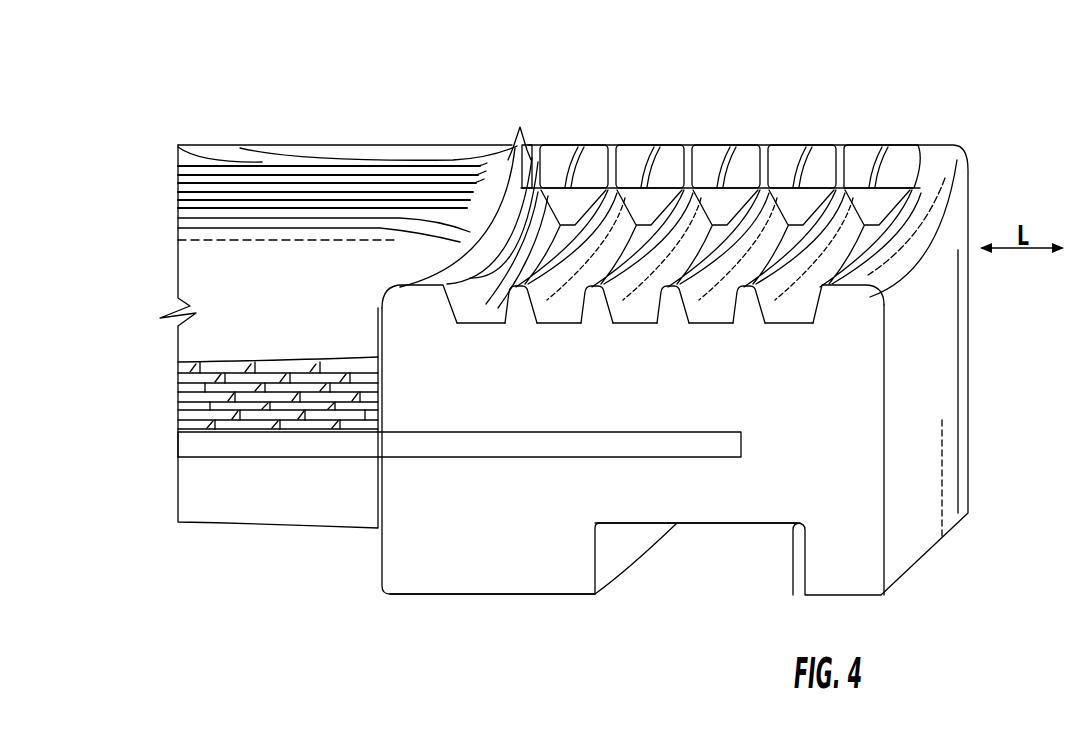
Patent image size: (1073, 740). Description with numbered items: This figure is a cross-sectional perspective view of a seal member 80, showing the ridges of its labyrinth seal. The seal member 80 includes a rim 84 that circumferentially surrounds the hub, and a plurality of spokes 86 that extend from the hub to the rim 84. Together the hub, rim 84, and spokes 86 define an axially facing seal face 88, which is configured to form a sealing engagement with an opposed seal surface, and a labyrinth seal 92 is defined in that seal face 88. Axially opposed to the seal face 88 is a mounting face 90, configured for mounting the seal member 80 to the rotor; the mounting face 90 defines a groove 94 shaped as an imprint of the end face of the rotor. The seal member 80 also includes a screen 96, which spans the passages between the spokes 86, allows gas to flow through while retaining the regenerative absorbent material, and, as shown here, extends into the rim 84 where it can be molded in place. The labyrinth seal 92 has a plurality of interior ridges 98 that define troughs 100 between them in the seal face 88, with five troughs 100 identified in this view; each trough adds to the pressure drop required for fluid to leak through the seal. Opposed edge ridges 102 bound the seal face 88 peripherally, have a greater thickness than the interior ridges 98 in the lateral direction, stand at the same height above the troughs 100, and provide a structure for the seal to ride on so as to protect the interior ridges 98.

The seal member 80 is at (412, 90).
The rim 84 is at (968, 338).
The spokes 86 is at (198, 293).
The seal face 88 is at (712, 168).
The mounting face 90 is at (567, 598).
The labyrinth seal 92 is at (712, 168).
The groove 94 is at (711, 558).
The screen 96 is at (178, 437).
The interior ridges 98 is at (514, 303).
The troughs 100 is at (472, 327).
The edge ridges 102 is at (410, 303).